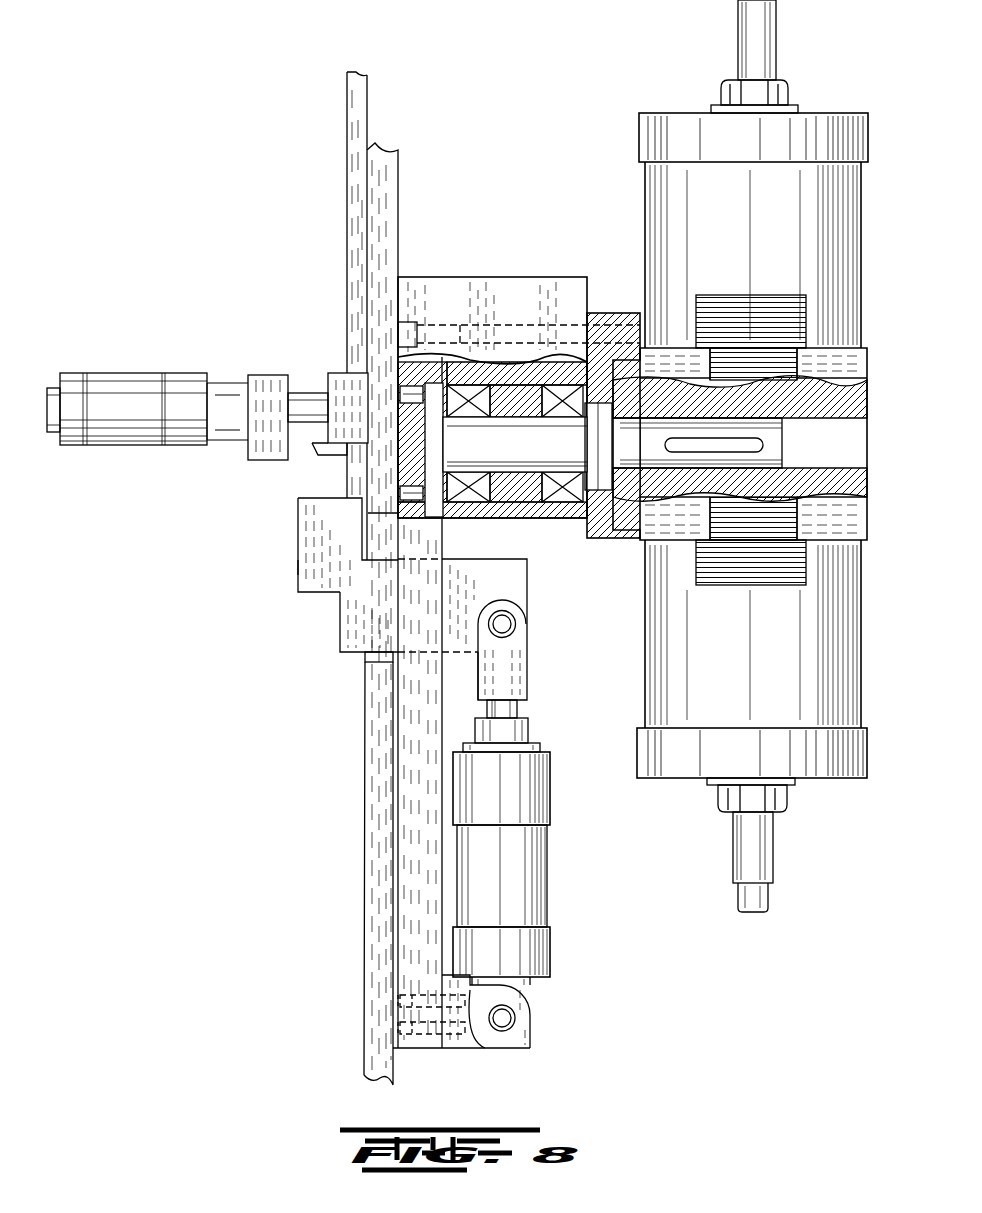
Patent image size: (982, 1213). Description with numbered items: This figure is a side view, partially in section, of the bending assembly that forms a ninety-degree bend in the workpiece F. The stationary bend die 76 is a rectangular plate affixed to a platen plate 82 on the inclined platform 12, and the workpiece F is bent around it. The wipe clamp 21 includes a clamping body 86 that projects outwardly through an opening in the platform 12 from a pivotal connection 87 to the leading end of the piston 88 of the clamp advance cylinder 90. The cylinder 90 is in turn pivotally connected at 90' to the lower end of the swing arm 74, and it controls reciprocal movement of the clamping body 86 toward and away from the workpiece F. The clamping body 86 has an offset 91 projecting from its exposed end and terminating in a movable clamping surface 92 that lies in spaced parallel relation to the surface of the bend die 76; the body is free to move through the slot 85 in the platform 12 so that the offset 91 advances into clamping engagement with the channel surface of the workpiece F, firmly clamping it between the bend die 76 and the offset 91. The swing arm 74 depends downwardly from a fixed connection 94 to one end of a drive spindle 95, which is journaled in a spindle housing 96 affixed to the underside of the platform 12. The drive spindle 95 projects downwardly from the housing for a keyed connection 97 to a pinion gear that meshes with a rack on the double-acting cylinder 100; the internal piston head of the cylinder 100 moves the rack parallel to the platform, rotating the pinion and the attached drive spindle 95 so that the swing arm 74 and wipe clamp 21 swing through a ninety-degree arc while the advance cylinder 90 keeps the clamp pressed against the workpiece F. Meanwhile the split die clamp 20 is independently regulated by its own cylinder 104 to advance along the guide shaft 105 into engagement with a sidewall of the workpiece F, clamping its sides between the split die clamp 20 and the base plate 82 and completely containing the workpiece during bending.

The platform 12 is at (367, 763).
The split die clamp 20 is at (248, 460).
The wipe clamp 21 is at (294, 572).
The swing arm 74 is at (408, 866).
The bend die 76 is at (338, 372).
The platen plate 82 is at (352, 205).
The slot 85 is at (363, 660).
The clamping body 86 is at (347, 614).
The pivotal connection 87 is at (520, 630).
The piston 88 is at (518, 708).
The clamp advance cylinder 90 is at (532, 851).
The pivotal connection 90' is at (499, 1011).
The offset 91 is at (298, 538).
The movable clamping surface 92 is at (300, 498).
The fixed connection 94 is at (417, 385).
The drive spindle 95 is at (513, 470).
The spindle housing 96 is at (565, 277).
The keyed connection 97 is at (745, 440).
The double-acting cylinder 100 is at (848, 662).
The cylinder 104 is at (125, 372).
The guide shaft 105 is at (305, 395).
The workpiece F is at (320, 455).